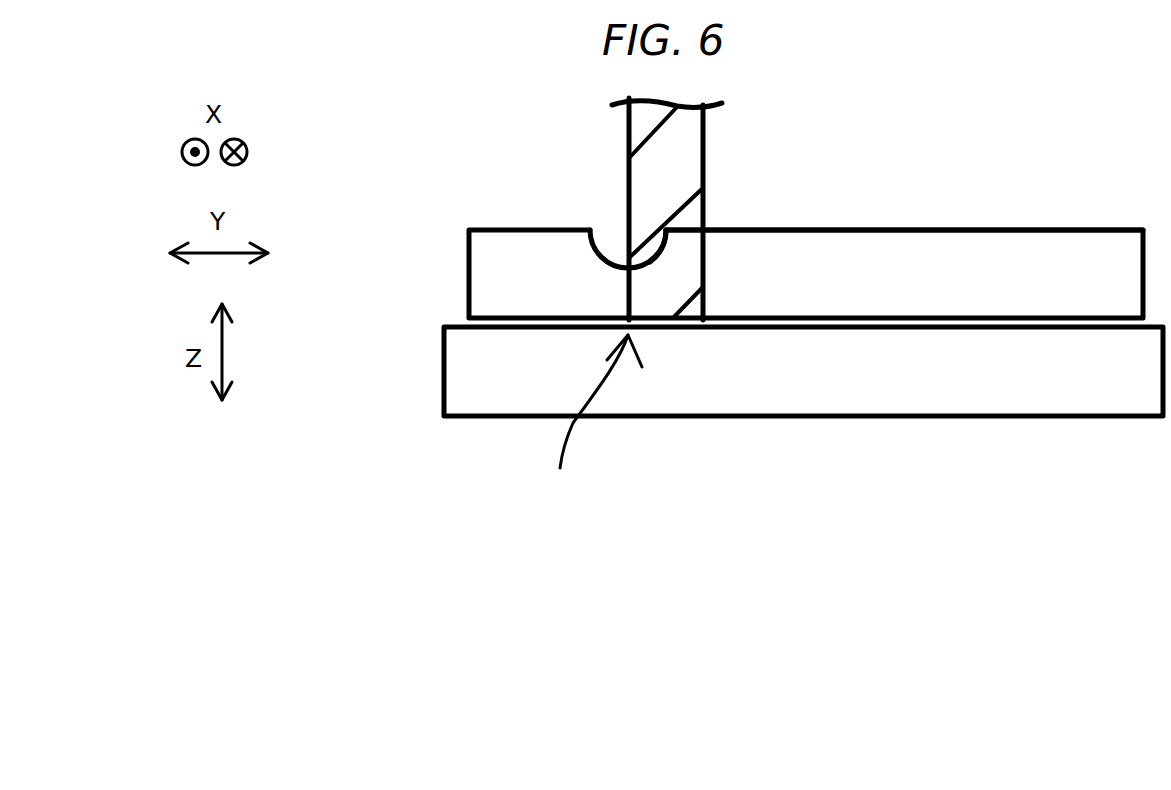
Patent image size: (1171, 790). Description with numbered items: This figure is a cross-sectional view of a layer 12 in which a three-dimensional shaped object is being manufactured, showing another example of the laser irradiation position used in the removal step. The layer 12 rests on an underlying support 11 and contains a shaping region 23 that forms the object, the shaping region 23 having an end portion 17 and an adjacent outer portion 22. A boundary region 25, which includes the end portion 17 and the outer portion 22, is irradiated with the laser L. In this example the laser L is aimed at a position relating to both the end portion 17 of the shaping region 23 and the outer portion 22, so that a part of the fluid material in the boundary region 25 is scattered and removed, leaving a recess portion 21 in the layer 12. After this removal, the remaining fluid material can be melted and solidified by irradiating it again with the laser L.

The substrate 11 is at (993, 393).
The layer 12 is at (962, 257).
The end portion 17 is at (670, 223).
The recess portion 21 is at (622, 238).
The outer portion 22 is at (588, 226).
The shaping region 23 is at (843, 253).
The boundary region 25 is at (590, 426).
The laser L is at (705, 140).